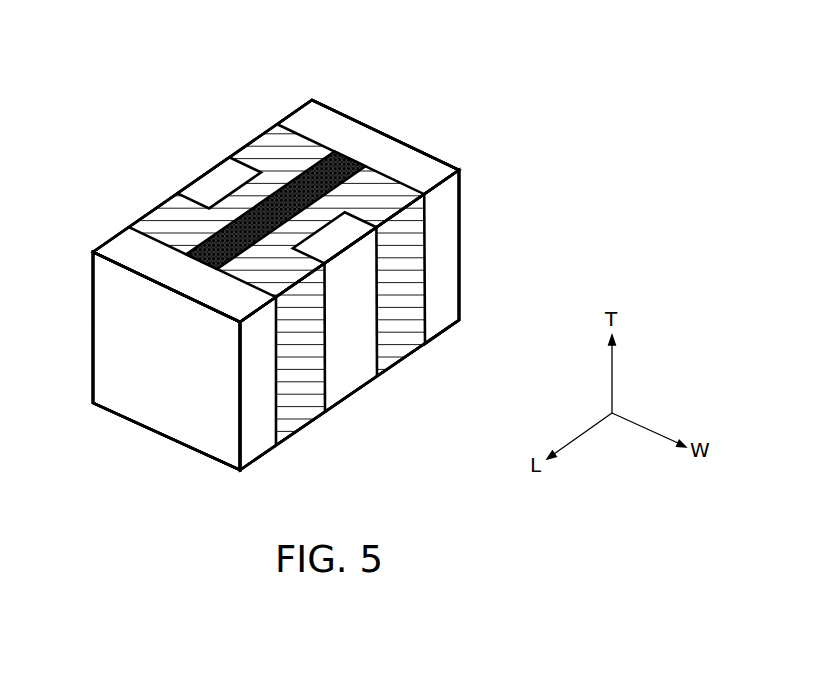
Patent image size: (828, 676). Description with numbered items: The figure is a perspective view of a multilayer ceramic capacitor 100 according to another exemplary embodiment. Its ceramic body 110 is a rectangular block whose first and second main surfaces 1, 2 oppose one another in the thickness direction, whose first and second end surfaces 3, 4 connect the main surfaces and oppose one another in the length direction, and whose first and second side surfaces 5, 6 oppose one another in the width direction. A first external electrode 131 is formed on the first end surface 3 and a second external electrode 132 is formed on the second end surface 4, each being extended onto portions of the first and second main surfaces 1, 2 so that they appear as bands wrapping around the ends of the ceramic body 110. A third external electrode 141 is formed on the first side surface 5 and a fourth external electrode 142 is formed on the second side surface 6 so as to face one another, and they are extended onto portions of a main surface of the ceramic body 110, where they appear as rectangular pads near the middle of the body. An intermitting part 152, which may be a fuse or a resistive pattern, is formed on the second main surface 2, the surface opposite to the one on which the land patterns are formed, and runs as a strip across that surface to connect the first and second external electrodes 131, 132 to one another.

The multilayer ceramic capacitor 100 is at (108, 32).
The ceramic body 110 is at (163, 220).
The first external electrode 131 is at (120, 248).
The second external electrode 132 is at (308, 117).
The third external electrode 141 is at (213, 183).
The fourth external electrode 142 is at (353, 378).
The intermitting part 152 is at (281, 192).
The first main surface 1 is at (339, 386).
The second main surface 2 is at (321, 159).
The first end surface 3 is at (157, 399).
The second end surface 4 is at (404, 162).
The first side surface 5 is at (110, 300).
The second side surface 6 is at (362, 317).